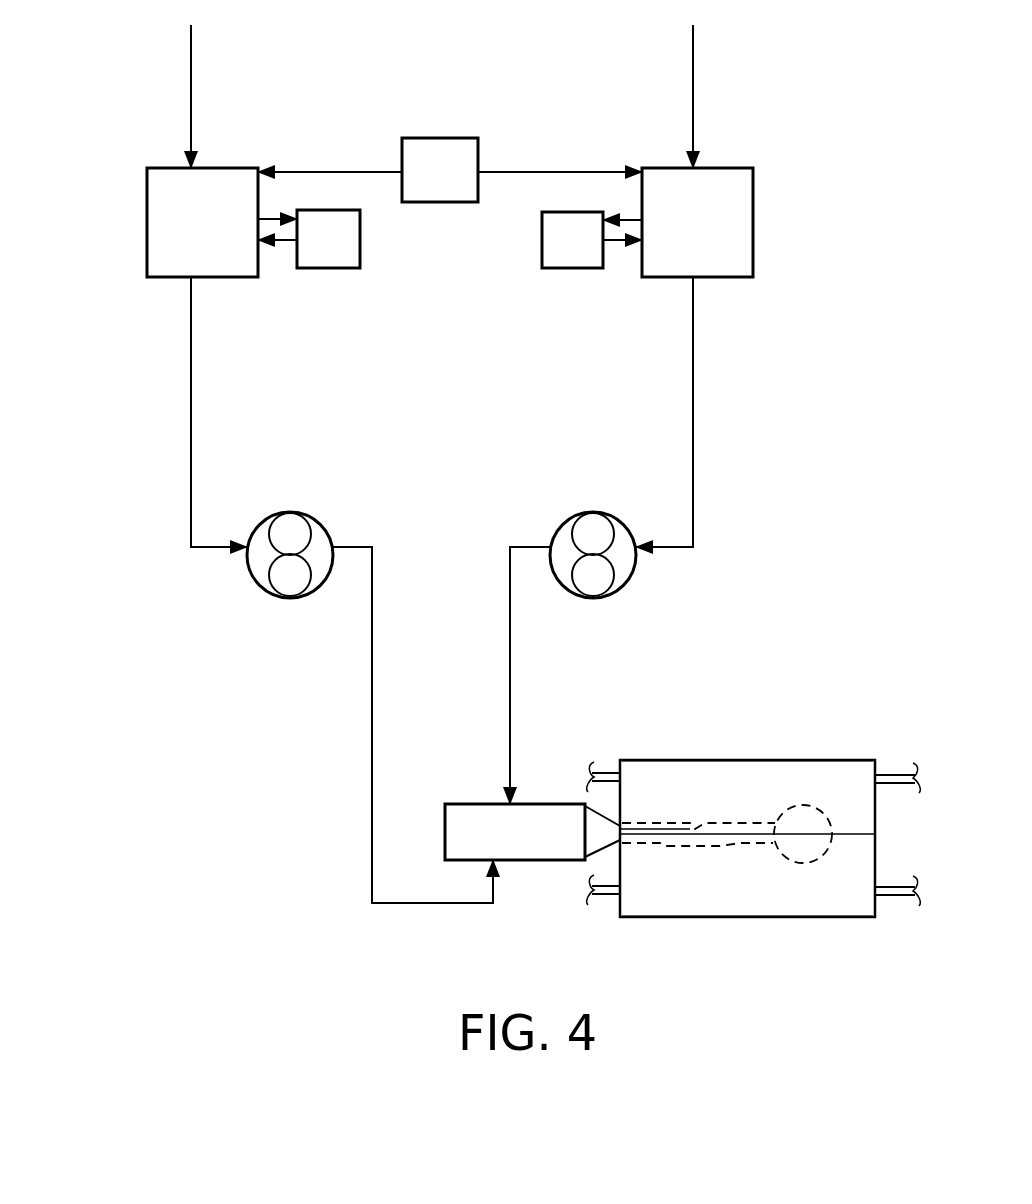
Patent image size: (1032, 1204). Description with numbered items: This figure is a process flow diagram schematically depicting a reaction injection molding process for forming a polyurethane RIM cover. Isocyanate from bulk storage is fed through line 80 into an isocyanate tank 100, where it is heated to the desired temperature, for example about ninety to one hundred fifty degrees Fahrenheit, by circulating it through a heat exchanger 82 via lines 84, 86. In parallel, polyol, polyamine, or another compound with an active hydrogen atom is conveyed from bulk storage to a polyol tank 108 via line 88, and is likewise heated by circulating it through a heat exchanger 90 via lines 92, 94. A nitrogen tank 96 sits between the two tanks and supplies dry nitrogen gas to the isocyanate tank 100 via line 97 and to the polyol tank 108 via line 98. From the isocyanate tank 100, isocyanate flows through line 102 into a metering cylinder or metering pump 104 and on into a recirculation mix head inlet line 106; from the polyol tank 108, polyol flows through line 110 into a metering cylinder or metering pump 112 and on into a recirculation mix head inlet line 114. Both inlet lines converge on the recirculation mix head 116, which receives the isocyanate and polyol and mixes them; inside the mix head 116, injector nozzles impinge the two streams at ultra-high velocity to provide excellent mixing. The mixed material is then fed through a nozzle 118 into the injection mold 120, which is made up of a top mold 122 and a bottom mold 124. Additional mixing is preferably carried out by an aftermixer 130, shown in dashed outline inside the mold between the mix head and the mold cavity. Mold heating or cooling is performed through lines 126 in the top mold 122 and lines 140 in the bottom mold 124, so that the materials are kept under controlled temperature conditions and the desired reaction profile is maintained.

The line 80 is at (191, 62).
The heat exchanger 82 is at (360, 255).
The line 84 is at (262, 217).
The line 86 is at (283, 243).
The line 88 is at (693, 60).
The heat exchanger 90 is at (540, 250).
The line 92 is at (638, 216).
The line 94 is at (613, 243).
The nitrogen tank 96 is at (445, 138).
The line 97 is at (325, 170).
The line 98 is at (550, 170).
The isocyanate tank 100 is at (147, 209).
The line 102 is at (190, 383).
The metering pump 104 is at (258, 583).
The recirculation mix head inlet line 106 is at (370, 750).
The polyol tank 108 is at (753, 213).
The line 110 is at (693, 390).
The metering pump 112 is at (615, 590).
The recirculation mix head inlet line 114 is at (512, 655).
The recirculation mix head 116 is at (507, 852).
The nozzle 118 is at (613, 836).
The injection mold 120 is at (772, 754).
The top mold 122 is at (712, 773).
The bottom mold 124 is at (715, 907).
The lines 126 is at (902, 773).
The aftermixer 130 is at (647, 818).
The lines 140 is at (895, 903).